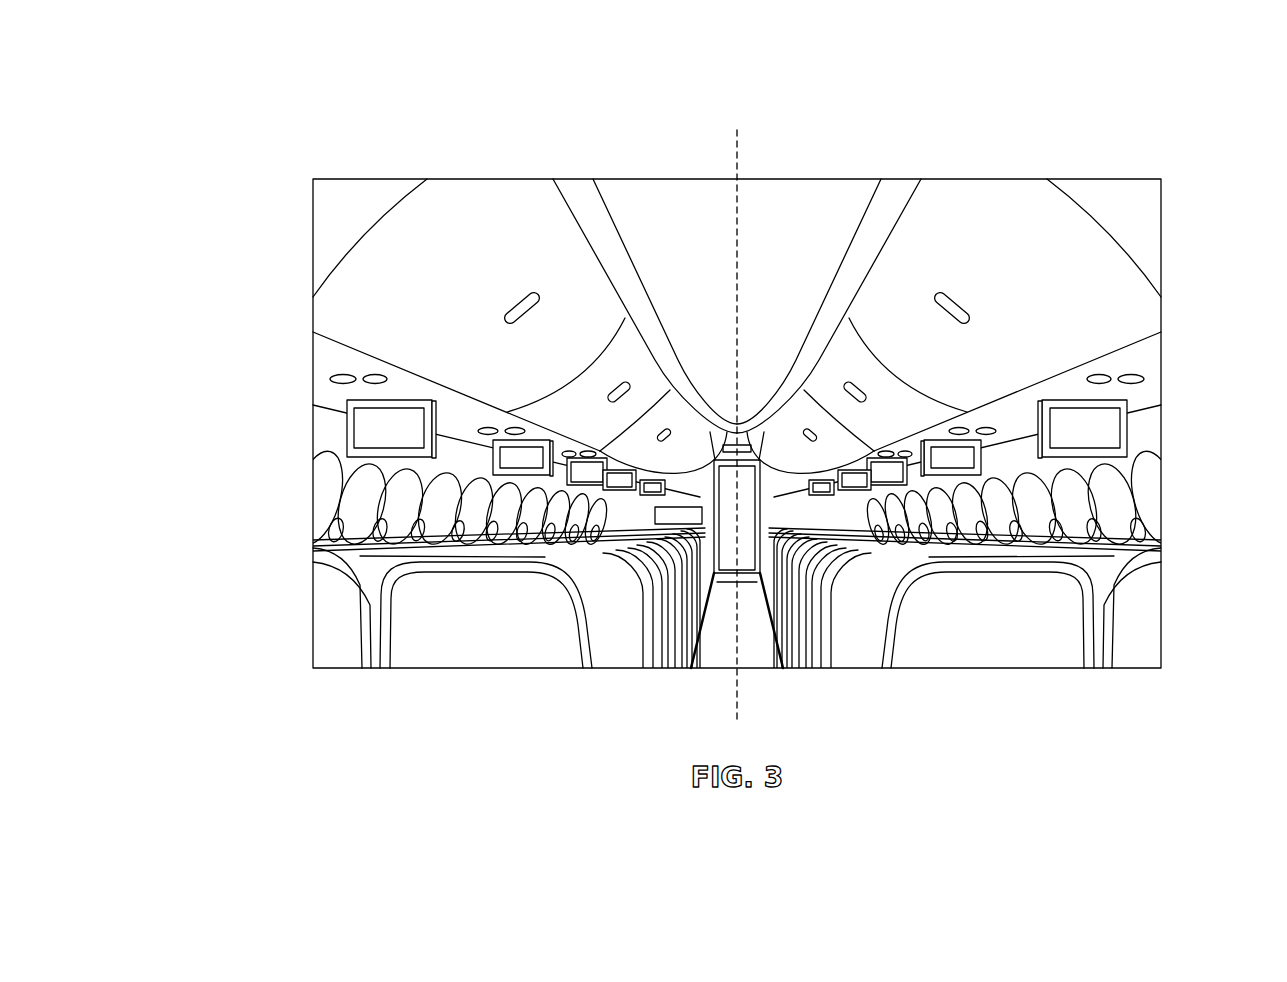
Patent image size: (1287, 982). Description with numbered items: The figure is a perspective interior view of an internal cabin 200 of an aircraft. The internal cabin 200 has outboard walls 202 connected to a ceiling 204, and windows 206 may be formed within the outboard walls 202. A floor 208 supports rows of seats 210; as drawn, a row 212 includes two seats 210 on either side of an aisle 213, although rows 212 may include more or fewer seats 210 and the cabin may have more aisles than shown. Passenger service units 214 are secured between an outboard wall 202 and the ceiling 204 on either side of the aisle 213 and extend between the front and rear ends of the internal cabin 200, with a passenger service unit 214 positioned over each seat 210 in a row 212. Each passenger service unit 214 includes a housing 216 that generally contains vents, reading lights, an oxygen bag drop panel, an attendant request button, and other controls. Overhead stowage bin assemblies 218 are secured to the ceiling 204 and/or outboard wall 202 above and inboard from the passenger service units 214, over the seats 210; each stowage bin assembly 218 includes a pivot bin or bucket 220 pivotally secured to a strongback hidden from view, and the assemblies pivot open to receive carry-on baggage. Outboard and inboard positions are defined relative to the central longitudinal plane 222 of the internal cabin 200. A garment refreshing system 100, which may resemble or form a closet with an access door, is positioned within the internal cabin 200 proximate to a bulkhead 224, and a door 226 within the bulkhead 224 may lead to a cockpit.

The garment refreshing system 100 is at (685, 513).
The internal cabin 200 is at (263, 140).
The outboard wall 202 is at (323, 430).
The ceiling 204 is at (795, 178).
The window 206 is at (345, 530).
The floor 208 is at (725, 650).
The seat 210 is at (484, 656).
The row 212 is at (322, 628).
The aisle 213 is at (758, 650).
The passenger service unit 214 is at (343, 384).
The housing 216 is at (313, 371).
The overhead stowage bin assembly 218 is at (418, 235).
The pivot bin 220 is at (487, 195).
The central longitudinal plane 222 is at (735, 152).
The bulkhead 224 is at (780, 490).
The door 226 is at (745, 452).